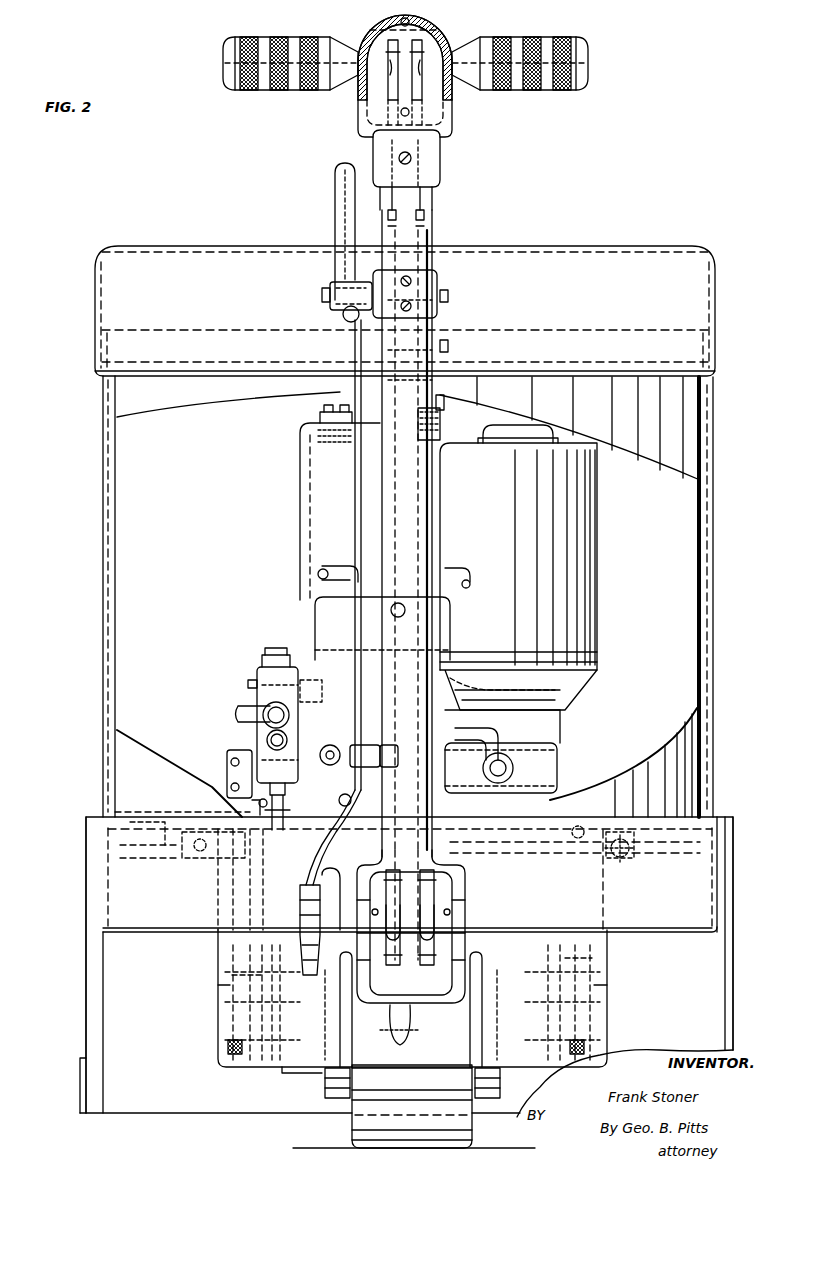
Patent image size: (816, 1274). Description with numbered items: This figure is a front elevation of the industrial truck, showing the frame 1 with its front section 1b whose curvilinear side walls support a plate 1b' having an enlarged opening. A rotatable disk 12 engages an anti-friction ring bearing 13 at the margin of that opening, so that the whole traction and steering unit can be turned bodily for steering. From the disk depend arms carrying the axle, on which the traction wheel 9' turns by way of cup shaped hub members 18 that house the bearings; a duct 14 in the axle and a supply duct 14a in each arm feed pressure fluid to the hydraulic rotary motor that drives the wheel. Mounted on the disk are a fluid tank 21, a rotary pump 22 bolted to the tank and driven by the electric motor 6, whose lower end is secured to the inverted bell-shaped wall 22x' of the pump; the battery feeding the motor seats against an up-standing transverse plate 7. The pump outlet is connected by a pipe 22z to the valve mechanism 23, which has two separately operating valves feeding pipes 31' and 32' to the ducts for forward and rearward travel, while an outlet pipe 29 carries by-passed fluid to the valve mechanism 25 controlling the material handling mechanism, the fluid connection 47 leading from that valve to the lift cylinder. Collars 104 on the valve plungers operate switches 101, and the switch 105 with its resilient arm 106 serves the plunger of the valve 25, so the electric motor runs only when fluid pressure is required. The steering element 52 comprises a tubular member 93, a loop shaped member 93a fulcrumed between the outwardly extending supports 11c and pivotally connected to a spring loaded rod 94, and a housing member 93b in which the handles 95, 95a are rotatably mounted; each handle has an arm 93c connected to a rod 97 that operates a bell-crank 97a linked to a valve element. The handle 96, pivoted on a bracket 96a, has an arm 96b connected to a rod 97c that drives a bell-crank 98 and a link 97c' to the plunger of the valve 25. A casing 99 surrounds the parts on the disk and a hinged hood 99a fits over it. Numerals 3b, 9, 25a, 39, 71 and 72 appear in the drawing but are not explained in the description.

The frame 1 is at (406, 965).
The front frame section 1b is at (407, 941).
The plate 1b' is at (145, 845).
The frame tab 3b is at (80, 1083).
The motor 6 is at (597, 627).
The transverse plate 7 is at (707, 583).
The steering wheel 9 is at (412, 1108).
The wheel 9' is at (414, 1138).
The supports 11c is at (485, 1012).
The disk 12 is at (624, 858).
The ring bearing 13 is at (622, 835).
The duct 14 is at (600, 975).
The supply duct 14a is at (600, 958).
The hub members 18 is at (516, 1070).
The tank 21 is at (300, 468).
The rotary pump 22 is at (584, 766).
The inverted bell-shaped wall 22x' is at (535, 686).
The pipe 22z is at (483, 726).
The valve mechanism 23 is at (346, 629).
The valve mechanism 25 is at (257, 672).
The valve fitting 25a is at (269, 806).
The pipe 29 is at (290, 732).
The pipe 31' is at (531, 703).
The pipe 32' is at (270, 710).
The side wall 39 is at (733, 1003).
The fluid connection 47 is at (246, 708).
The steering element 52 is at (476, 430).
The valve bracket 71 is at (318, 680).
The cable clamp 72 is at (325, 752).
The tubular member 93 is at (432, 486).
The loop shaped member 93a is at (462, 878).
The housing member 93b is at (445, 130).
The arm 93c is at (428, 24).
The rod 94 is at (408, 1067).
The controlling device 95 is at (280, 92).
The controlling device 95a is at (527, 92).
The controlling element 96 is at (337, 208).
The bracket 96a is at (437, 284).
The arm 96b is at (350, 283).
The rod 97 is at (422, 220).
The bell-crank 97a is at (388, 1030).
The rod 97c is at (341, 555).
The link 97c' is at (273, 860).
The bell-crank 98 is at (307, 976).
The casing 99 is at (700, 752).
The hood 99a is at (715, 298).
The switch 101 is at (411, 785).
The collar 104 is at (350, 798).
The switch 105 is at (227, 766).
The contact closing arm 106 is at (230, 803).